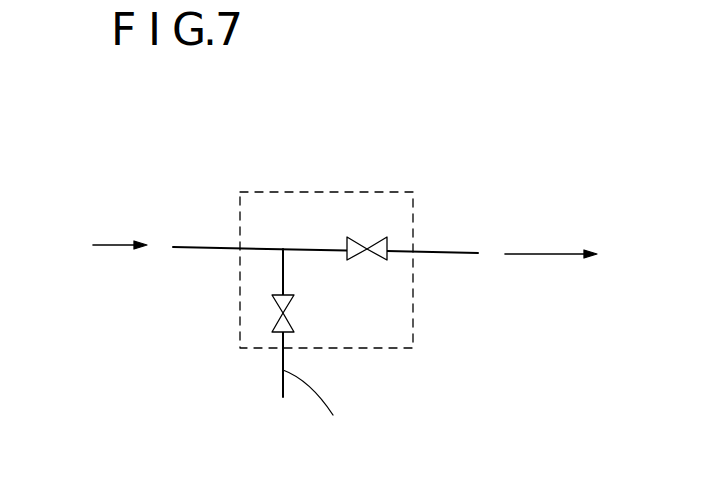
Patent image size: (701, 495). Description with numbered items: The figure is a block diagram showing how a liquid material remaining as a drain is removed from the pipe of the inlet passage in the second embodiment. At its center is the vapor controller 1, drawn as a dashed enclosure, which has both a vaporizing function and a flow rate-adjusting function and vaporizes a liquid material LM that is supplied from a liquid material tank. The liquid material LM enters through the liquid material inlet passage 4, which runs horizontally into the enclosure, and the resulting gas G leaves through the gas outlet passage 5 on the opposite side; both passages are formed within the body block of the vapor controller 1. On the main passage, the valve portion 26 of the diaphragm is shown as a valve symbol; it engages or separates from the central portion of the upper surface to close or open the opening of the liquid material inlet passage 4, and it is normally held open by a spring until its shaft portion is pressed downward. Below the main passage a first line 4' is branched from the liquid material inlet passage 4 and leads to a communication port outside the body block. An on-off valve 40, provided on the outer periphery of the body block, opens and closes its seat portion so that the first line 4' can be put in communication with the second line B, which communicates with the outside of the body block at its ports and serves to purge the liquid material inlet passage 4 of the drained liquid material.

The vapor controller 1 is at (413, 226).
The liquid material inlet passage 4 is at (257, 292).
The first line 4' is at (327, 323).
The gas outlet passage 5 is at (455, 253).
The valve portion 26 is at (368, 247).
The on-off valve 40 is at (268, 313).
The liquid material LM is at (97, 247).
The gas outlet flow G is at (564, 255).
The second line B is at (321, 404).